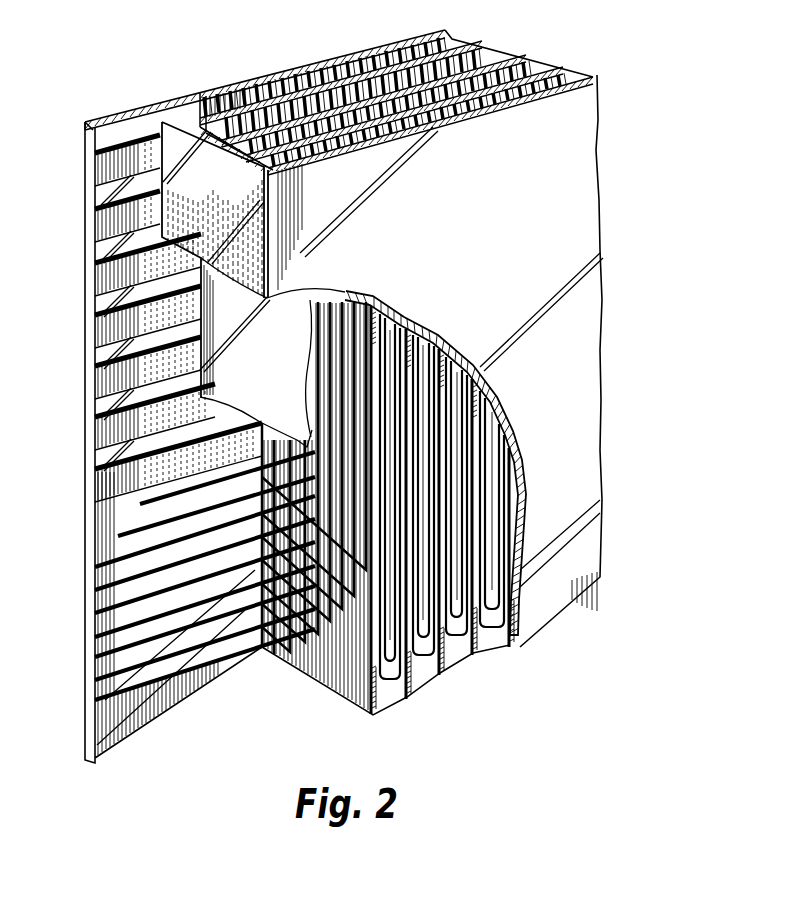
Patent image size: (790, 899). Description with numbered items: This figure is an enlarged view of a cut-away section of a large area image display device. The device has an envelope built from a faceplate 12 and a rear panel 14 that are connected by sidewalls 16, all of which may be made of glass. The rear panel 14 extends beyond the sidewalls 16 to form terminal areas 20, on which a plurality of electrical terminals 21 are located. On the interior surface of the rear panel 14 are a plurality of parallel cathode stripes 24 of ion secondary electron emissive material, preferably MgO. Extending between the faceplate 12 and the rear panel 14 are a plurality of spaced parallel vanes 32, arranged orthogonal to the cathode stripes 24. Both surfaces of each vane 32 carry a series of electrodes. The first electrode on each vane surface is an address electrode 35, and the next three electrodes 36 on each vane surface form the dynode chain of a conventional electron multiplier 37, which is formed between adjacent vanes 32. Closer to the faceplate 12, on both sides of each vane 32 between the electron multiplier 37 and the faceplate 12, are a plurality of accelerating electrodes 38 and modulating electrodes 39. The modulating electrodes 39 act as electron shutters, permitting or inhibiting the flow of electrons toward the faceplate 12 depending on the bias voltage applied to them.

The faceplate 12 is at (521, 267).
The rear panel 14 is at (96, 548).
The sidewalls 16 is at (228, 207).
The terminal areas 20 is at (97, 251).
The electrical terminals 21 is at (97, 686).
The cathode stripes 24 is at (100, 380).
The vanes 32 is at (447, 678).
The address electrode 35 is at (290, 397).
The dynode electrodes 36 is at (305, 428).
The electron multiplier 37 is at (300, 408).
The accelerating electrodes 38 is at (345, 322).
The modulating electrodes 39 is at (311, 378).